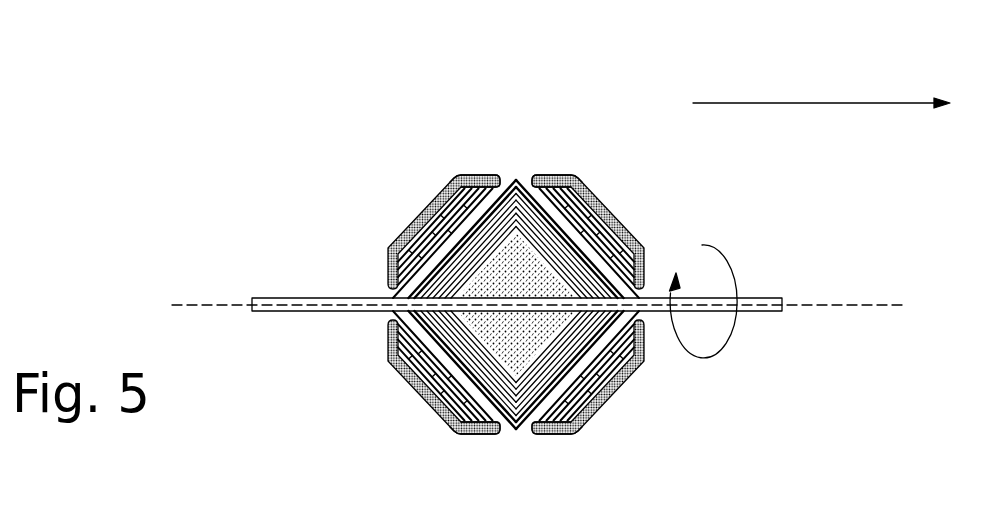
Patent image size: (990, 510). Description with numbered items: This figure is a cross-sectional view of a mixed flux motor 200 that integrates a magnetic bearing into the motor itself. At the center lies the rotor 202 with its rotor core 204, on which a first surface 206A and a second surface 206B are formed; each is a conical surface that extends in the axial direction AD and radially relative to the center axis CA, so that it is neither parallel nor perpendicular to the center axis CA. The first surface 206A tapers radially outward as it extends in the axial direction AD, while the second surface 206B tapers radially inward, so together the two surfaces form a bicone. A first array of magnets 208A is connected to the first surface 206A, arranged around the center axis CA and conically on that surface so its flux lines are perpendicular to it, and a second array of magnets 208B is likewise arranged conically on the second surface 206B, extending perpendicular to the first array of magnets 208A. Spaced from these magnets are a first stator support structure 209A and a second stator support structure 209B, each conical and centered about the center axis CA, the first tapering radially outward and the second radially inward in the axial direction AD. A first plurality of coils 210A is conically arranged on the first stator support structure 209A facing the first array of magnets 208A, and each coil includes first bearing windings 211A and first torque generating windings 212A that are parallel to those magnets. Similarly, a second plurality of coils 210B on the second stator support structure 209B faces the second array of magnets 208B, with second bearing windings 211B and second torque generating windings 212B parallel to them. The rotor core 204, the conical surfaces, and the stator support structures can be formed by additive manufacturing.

The mixed flux motor 200 is at (285, 134).
The rotor 202 is at (272, 297).
The rotor core 204 is at (514, 356).
The first surface 206A is at (458, 430).
The second surface 206B is at (615, 393).
The first array of magnets 208A is at (422, 397).
The second array of magnets 208B is at (645, 358).
The first stator support structure 209A is at (477, 173).
The second stator support structure 209B is at (555, 173).
The first plurality of coils 210A is at (394, 370).
The second plurality of coils 210B is at (591, 417).
The first bearing windings 211A is at (457, 177).
The second bearing windings 211B is at (575, 185).
The first torque generating windings 212A is at (425, 213).
The second torque generating windings 212B is at (608, 213).
The axial direction AD is at (815, 100).
The center axis CA is at (863, 302).